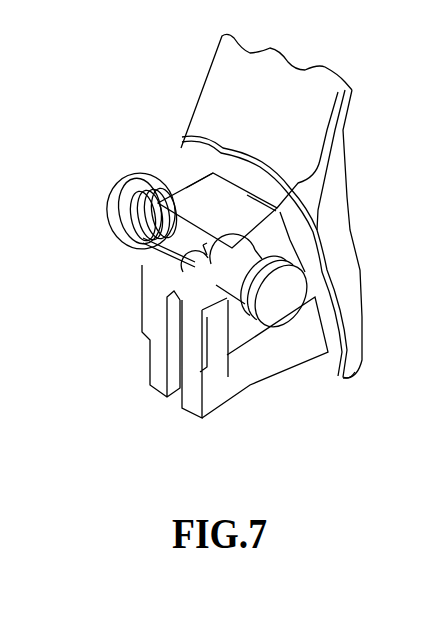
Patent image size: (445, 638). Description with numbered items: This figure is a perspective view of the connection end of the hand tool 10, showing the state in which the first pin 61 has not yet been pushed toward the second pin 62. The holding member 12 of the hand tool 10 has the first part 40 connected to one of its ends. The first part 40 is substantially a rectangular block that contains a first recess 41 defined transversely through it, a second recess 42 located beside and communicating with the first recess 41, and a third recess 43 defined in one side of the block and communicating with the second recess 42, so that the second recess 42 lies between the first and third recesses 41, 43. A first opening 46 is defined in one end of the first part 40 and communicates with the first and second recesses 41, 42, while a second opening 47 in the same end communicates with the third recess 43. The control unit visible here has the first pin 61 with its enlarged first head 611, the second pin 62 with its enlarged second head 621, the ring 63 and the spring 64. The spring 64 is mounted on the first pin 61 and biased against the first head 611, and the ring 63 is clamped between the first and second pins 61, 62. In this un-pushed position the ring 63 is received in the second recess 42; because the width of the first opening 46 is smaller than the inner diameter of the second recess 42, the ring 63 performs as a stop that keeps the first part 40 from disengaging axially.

The hand tool 10 is at (184, 106).
The holding member 12 is at (227, 75).
The first part 40 is at (210, 187).
The first recess 41 is at (177, 279).
The second recess 42 is at (238, 297).
The third recess 43 is at (250, 312).
The first opening 46 is at (188, 182).
The second opening 47 is at (135, 232).
The first pin 61 is at (195, 260).
The first head 611 is at (112, 198).
The second pin 62 is at (228, 362).
The second head 621 is at (273, 313).
The ring 63 is at (215, 283).
The spring 64 is at (128, 230).